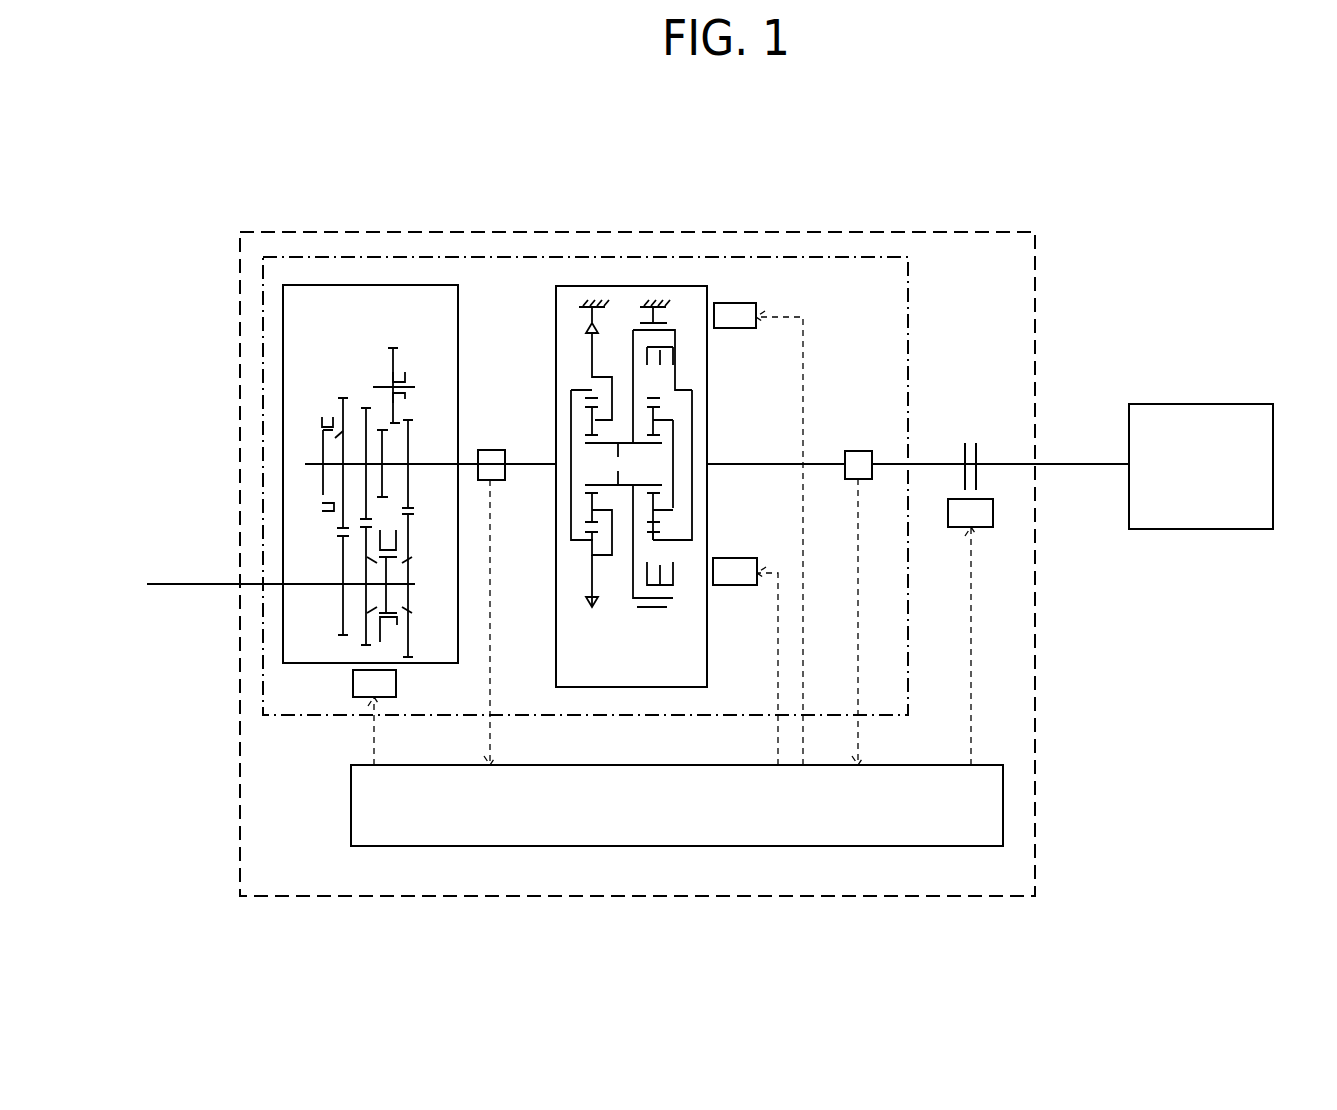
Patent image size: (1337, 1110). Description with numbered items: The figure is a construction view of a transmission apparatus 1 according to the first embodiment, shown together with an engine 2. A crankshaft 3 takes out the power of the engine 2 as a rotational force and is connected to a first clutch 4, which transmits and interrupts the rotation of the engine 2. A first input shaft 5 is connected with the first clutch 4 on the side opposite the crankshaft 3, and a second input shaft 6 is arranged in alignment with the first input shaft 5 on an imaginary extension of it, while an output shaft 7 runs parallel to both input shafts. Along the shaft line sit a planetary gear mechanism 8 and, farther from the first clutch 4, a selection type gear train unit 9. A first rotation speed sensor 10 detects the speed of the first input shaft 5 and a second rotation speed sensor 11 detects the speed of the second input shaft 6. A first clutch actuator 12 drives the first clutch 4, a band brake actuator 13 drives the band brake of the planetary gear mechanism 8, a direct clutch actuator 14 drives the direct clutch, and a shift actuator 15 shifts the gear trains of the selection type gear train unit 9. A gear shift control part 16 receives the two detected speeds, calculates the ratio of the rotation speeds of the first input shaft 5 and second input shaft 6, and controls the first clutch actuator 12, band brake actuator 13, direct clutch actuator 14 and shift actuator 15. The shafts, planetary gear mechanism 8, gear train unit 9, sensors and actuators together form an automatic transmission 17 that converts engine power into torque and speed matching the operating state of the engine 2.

The transmission apparatus 1 is at (1037, 699).
The engine 2 is at (1183, 404).
The crankshaft 3 is at (1072, 465).
The first clutch 4 is at (980, 452).
The first input shaft 5 is at (727, 463).
The second input shaft 6 is at (522, 468).
The output shaft 7 is at (182, 590).
The planetary gear mechanism 8 is at (630, 286).
The selection type gear train unit 9 is at (375, 285).
The first rotation speed sensor 10 is at (852, 451).
The second rotation speed sensor 11 is at (494, 450).
The first clutch actuator 12 is at (993, 512).
The band brake actuator 13 is at (735, 303).
The direct clutch actuator 14 is at (735, 585).
The shift actuator 15 is at (396, 683).
The gear shift control part 16 is at (351, 790).
The automatic transmission 17 is at (910, 304).